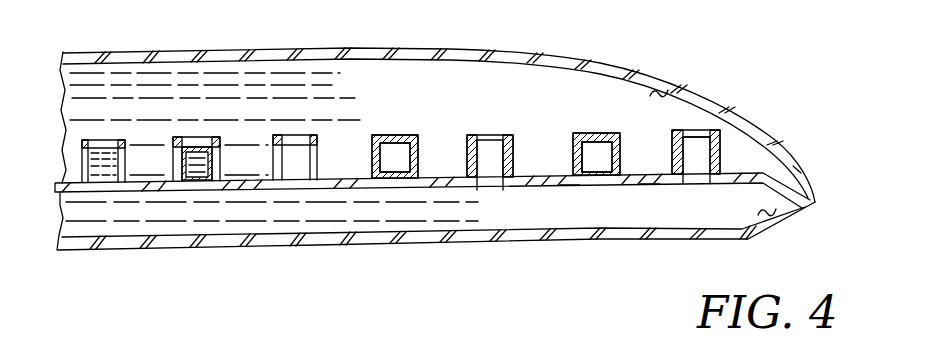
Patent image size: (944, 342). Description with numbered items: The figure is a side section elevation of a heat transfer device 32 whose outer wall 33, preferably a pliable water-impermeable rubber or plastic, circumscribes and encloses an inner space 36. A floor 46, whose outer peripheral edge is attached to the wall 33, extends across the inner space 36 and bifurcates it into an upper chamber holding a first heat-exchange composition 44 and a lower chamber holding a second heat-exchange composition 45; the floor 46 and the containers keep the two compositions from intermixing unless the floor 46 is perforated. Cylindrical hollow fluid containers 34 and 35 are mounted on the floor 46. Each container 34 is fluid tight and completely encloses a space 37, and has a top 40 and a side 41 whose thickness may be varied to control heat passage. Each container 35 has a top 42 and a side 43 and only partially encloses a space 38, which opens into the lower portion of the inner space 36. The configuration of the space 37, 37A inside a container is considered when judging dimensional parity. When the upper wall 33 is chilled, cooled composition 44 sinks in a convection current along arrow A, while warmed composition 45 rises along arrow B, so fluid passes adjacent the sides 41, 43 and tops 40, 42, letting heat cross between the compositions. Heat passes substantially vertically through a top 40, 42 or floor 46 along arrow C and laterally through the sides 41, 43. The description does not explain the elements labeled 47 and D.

The heat transfer device 32 is at (448, 146).
The outer wall 33 is at (270, 42).
The fluid container 34 is at (338, 170).
The fluid container 35 is at (481, 121).
The inner space 36 is at (673, 73).
The space 37 is at (390, 160).
The space 37A is at (698, 156).
The space 38 is at (490, 152).
The top 40 is at (581, 133).
The side 41 is at (578, 168).
The top 42 is at (681, 130).
The side 43 is at (682, 167).
The first heat-exchange composition 44 is at (165, 93).
The second heat-exchange composition 45 is at (242, 216).
The floor 46 is at (648, 183).
The nose 47 is at (794, 167).
The arrow A is at (379, 122).
The arrow B is at (300, 182).
The arrow C is at (497, 120).
The flow path D is at (461, 165).